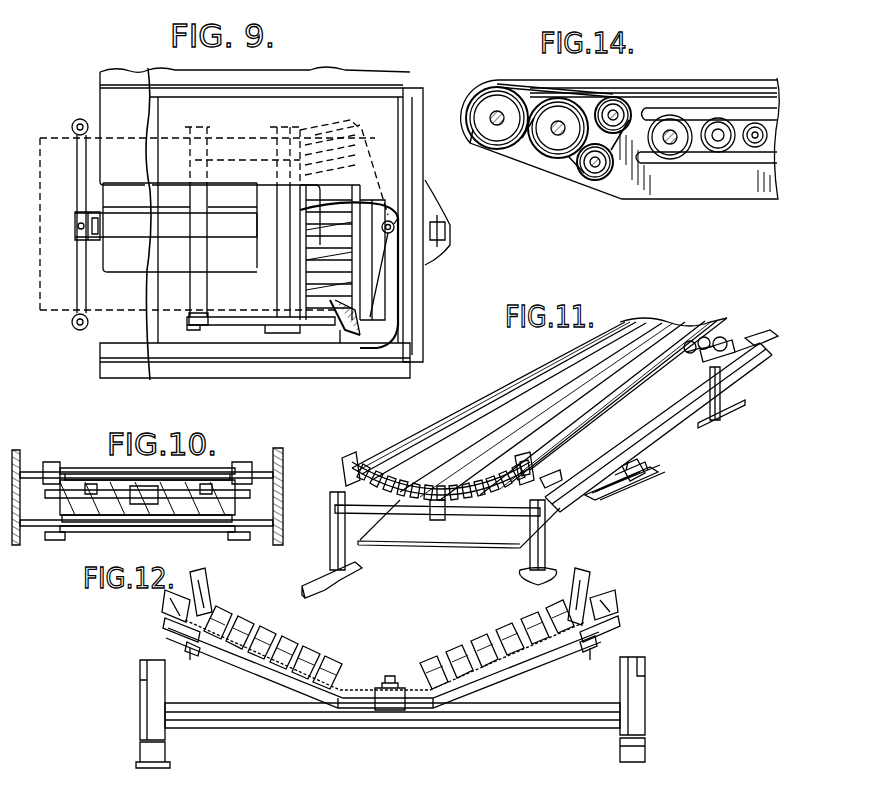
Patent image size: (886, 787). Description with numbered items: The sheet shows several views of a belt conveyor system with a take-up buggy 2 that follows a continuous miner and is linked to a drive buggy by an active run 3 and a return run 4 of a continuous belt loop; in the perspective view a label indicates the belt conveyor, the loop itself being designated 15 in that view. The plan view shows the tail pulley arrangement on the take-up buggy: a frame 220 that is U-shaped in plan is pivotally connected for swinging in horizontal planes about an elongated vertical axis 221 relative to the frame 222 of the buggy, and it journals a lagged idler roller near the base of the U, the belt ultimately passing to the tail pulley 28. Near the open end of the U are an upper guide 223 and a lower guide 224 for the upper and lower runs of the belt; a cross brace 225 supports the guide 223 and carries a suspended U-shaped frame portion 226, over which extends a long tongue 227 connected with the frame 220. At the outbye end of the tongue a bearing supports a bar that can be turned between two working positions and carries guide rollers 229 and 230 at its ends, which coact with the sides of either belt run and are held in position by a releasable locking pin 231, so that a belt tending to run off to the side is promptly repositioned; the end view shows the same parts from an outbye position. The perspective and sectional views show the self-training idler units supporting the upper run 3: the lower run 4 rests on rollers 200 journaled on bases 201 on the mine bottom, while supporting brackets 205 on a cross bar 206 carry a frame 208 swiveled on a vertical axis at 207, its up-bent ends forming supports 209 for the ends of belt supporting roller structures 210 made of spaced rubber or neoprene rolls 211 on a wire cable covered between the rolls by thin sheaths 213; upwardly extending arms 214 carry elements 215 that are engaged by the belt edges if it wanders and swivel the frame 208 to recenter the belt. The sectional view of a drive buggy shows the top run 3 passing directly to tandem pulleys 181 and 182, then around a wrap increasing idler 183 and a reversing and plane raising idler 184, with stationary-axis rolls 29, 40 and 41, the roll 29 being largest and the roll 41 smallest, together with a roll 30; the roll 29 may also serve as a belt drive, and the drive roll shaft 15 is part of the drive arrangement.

In FIG. 9, the take-up buggy 2 is at (332, 372).
In FIG. 10, the take-up buggy 2 is at (279, 450).
In FIG. 9, the active run 3 is at (40, 216).
In FIG. 11, the active run 3 is at (556, 372).
In FIG. 10, the active run 3 is at (75, 465).
In FIG. 12, the active run 3 is at (395, 641).
In FIG. 11, the return run 4 is at (480, 550).
In FIG. 10, the return run 4 is at (70, 522).
In FIG. 11, the shaft 15 is at (682, 328).
In FIG. 9, the tail pulley 28 is at (352, 330).
In FIG. 10, the tail pulley 28 is at (215, 520).
In FIG. 14, the final roll 29 is at (665, 152).
In FIG. 14, the roller 30 is at (668, 160).
In FIG. 14, the roll 40 is at (716, 155).
In FIG. 14, the roll 41 is at (753, 150).
In FIG. 14, the pulley 181 is at (492, 146).
In FIG. 14, the pulley 182 is at (547, 154).
In FIG. 14, the wrap increasing idler 183 is at (591, 180).
In FIG. 14, the reversing and plane raising idler 184 is at (618, 100).
In FIG. 11, the rollers 200 is at (640, 468).
In FIG. 11, the bases 201 is at (620, 492).
In FIG. 11, the supporting brackets 205 is at (337, 557).
In FIG. 12, the supporting brackets 205 is at (152, 705).
In FIG. 11, the cross bar 206 is at (380, 515).
In FIG. 12, the cross bar 206 is at (322, 712).
In FIG. 12, the vertical swivel axis 207 is at (381, 712).
In FIG. 12, the frame 208 is at (560, 653).
In FIG. 11, the supports 209 is at (540, 502).
In FIG. 12, the supports 209 is at (165, 623).
In FIG. 11, the belt supporting roller structures 210 is at (582, 502).
In FIG. 12, the belt supporting roller structures 210 is at (165, 599).
In FIG. 11, the rolls 211 is at (423, 480).
In FIG. 12, the rolls 211 is at (329, 641).
In FIG. 12, the sheaths 213 is at (471, 641).
In FIG. 12, the upwardly extending arms 214 is at (185, 646).
In FIG. 11, the elements 215 is at (358, 462).
In FIG. 12, the elements 215 is at (208, 579).
In FIG. 9, the U-shaped frame 220 is at (260, 320).
In FIG. 9, the vertical axis 221 is at (394, 228).
In FIG. 9, the frame 222 is at (400, 282).
In FIG. 10, the upper guide 223 is at (180, 468).
In FIG. 10, the lower guide 224 is at (145, 515).
In FIG. 10, the cross brace 225 is at (255, 466).
In FIG. 10, the U-shaped frame portion 226 is at (90, 518).
In FIG. 9, the tongue 227 is at (183, 222).
In FIG. 10, the tongue 227 is at (180, 520).
In FIG. 9, the guide roller 229 is at (72, 127).
In FIG. 10, the guide roller 229 is at (40, 490).
In FIG. 9, the guide roller 230 is at (73, 326).
In FIG. 10, the guide roller 230 is at (246, 481).
In FIG. 9, the releasable locking pin 231 is at (77, 228).